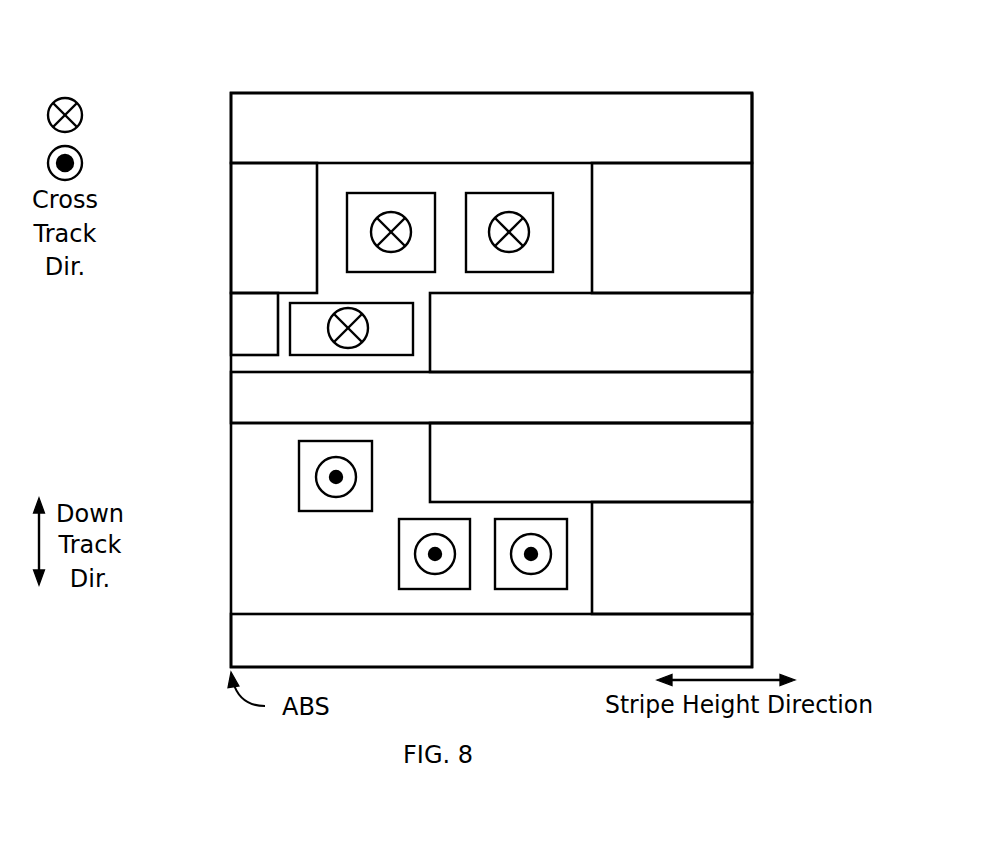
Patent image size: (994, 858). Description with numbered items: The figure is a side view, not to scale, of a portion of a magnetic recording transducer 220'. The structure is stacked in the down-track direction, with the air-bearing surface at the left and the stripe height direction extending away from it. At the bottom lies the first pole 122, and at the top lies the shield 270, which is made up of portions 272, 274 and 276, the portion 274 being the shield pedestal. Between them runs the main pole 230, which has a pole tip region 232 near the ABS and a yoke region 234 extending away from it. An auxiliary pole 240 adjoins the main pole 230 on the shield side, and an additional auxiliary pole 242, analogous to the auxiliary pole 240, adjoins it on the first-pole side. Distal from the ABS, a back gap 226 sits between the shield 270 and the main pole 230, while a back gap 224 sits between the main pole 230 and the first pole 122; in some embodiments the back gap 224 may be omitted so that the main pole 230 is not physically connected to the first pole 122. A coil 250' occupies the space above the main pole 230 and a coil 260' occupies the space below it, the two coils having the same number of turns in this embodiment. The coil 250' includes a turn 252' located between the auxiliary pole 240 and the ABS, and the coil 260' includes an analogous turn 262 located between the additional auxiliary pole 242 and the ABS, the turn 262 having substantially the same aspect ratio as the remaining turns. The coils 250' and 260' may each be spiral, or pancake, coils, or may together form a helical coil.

The magnetic recording transducer 220' is at (491, 356).
The coil 250' is at (521, 166).
The shield portion 272 is at (491, 128).
The shield portion 274 is at (274, 228).
The back gap 226 is at (672, 228).
The shield portion 276 is at (229, 320).
The coil turn 252' is at (284, 353).
The auxiliary pole 240 is at (591, 332).
The main pole 230 is at (491, 397).
The pole tip region 232 is at (248, 436).
The yoke region 234 is at (412, 435).
The additional auxiliary pole 242 is at (591, 462).
The coil turn 262 is at (336, 512).
The coil 260' is at (369, 571).
The back gap 224 is at (672, 558).
The first pole 122 is at (491, 640).
The shield 270 is at (790, 150).